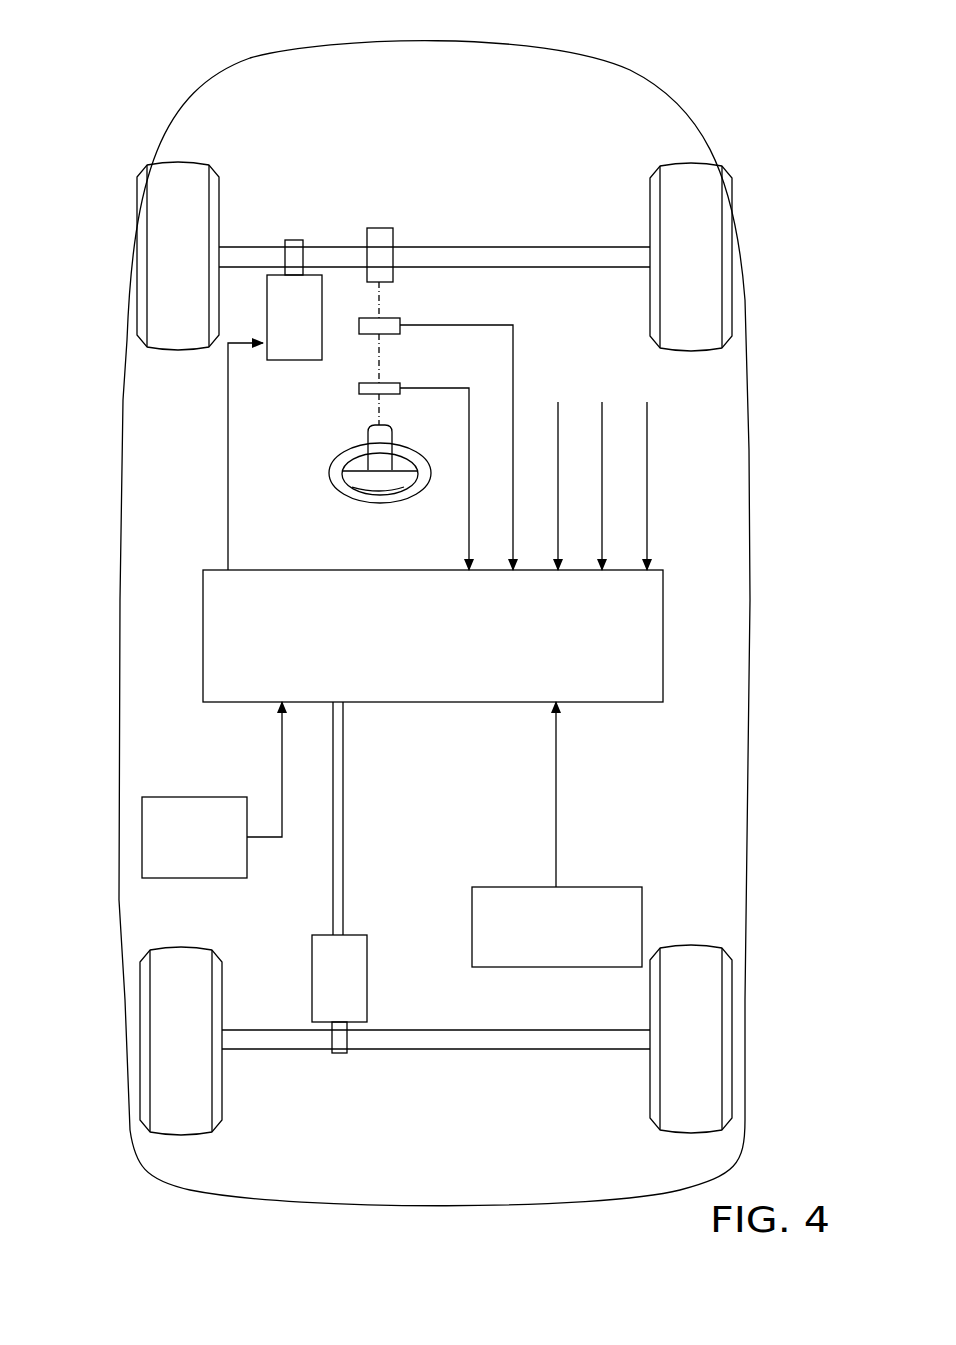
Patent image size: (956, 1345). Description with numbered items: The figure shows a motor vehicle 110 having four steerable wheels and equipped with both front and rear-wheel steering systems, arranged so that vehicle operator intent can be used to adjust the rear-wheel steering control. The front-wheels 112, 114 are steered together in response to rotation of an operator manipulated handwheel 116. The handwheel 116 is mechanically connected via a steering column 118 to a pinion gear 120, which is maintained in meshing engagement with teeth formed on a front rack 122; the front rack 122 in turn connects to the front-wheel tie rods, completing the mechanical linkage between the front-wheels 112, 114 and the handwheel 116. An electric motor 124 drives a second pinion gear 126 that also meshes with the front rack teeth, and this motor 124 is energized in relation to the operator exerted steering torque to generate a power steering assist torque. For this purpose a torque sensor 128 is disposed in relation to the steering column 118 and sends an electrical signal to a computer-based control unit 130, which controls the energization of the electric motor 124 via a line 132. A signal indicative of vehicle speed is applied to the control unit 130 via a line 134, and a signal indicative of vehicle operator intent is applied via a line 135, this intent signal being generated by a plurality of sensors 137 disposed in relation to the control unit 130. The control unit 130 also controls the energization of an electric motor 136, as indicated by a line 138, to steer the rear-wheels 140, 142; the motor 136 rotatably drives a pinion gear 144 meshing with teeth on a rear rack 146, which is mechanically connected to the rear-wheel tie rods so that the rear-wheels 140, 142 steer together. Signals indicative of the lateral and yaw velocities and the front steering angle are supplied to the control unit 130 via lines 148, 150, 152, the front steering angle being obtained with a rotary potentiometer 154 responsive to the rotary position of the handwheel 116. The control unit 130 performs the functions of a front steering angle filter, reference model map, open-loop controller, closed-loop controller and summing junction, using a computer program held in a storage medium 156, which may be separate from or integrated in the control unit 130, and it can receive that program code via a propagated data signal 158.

The motor vehicle 110 is at (96, 610).
The front-wheel 112 is at (137, 267).
The front-wheel 114 is at (732, 267).
The handwheel 116 is at (336, 482).
The steering column 118 is at (381, 369).
The pinion gear 120 is at (377, 232).
The front rack 122 is at (518, 247).
The electric motor 124 is at (283, 322).
The second pinion gear 126 is at (293, 240).
The torque sensor 128 is at (393, 317).
The control unit 130 is at (632, 690).
The line 132 is at (228, 408).
The line 134 is at (558, 442).
The line 135 is at (282, 753).
The electric motor 136 is at (357, 935).
The sensors 137 is at (187, 808).
The line 138 is at (343, 767).
The rear-wheel 140 is at (140, 1053).
The rear-wheel 142 is at (733, 1050).
The pinion gear 144 is at (339, 1055).
The rear rack 146 is at (480, 1050).
The line 148 is at (602, 465).
The line 150 is at (647, 445).
The line 152 is at (469, 508).
The rotary potentiometer 154 is at (362, 386).
The storage medium 156 is at (615, 898).
The propagated data signal 158 is at (556, 787).